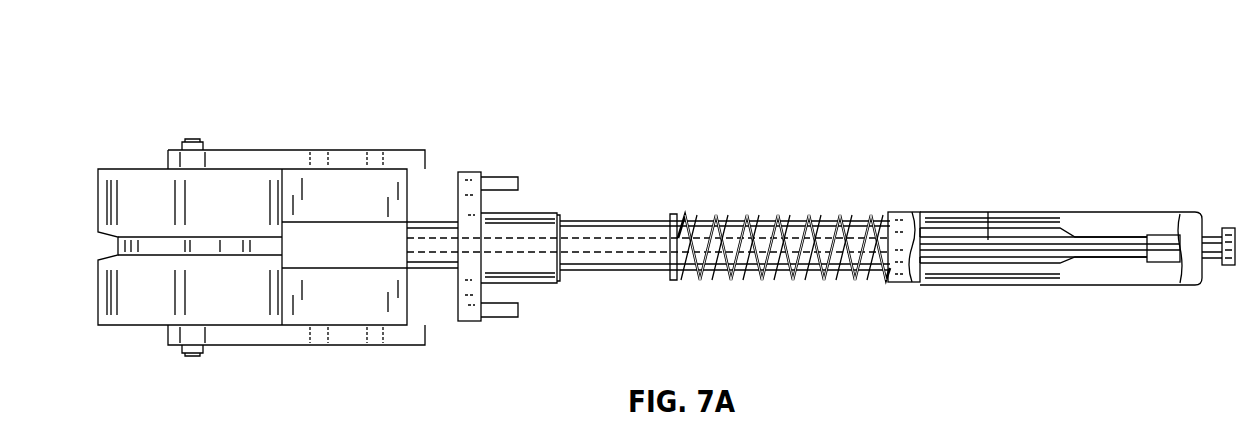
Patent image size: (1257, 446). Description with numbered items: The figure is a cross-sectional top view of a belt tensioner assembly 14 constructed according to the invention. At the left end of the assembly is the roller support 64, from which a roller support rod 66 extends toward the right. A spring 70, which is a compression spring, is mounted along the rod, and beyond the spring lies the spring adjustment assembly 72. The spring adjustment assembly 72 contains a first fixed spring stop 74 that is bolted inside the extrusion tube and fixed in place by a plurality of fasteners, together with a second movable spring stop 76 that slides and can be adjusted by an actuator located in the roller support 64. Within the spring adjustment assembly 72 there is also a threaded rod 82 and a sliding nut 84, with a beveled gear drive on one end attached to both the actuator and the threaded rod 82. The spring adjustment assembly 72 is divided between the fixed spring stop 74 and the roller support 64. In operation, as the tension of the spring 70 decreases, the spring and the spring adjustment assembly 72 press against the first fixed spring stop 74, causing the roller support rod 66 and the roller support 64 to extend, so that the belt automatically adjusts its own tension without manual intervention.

The belt tensioner assembly 14 is at (416, 84).
The roller support 64 is at (240, 84).
The roller support rod 66 is at (592, 218).
The spring 70 is at (810, 220).
The spring adjustment assembly 72 is at (838, 127).
The first fixed spring stop 74 is at (1010, 322).
The second movable spring stop 76 is at (592, 255).
The threaded rod 82 is at (1073, 243).
The sliding nut 84 is at (1228, 230).